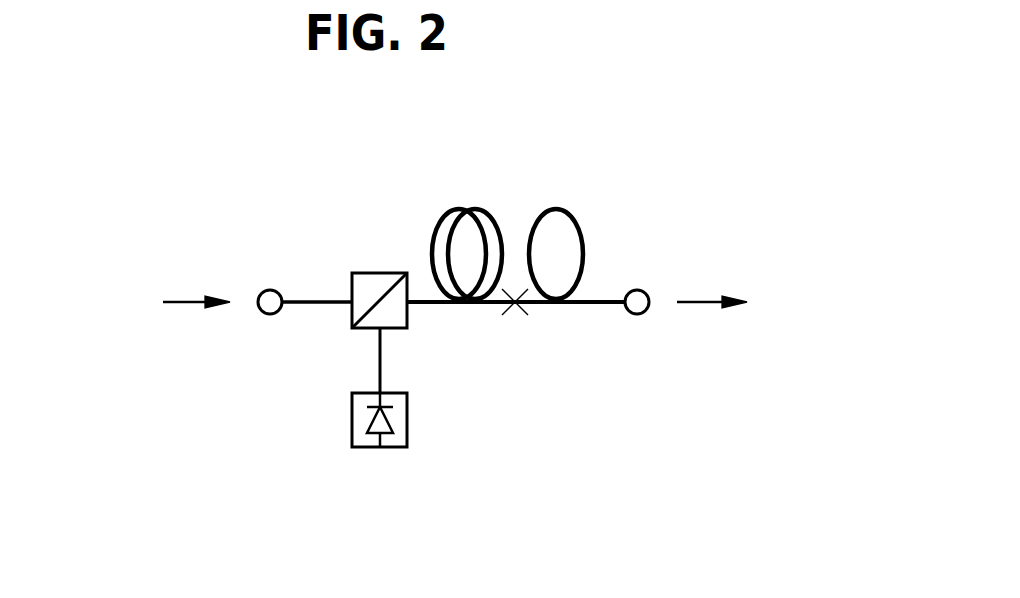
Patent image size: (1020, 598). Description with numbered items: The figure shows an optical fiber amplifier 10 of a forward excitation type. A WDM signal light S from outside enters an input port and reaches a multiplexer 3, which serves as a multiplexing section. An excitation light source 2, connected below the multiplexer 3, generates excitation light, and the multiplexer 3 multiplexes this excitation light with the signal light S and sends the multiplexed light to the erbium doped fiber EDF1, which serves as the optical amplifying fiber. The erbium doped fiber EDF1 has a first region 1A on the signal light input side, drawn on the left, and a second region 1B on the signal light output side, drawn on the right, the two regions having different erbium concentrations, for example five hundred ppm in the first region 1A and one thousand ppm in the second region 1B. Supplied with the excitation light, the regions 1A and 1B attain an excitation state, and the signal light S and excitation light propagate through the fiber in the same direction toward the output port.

The optical fiber amplifier 10 is at (268, 140).
The multiplexer 3 is at (352, 273).
The excitation light source 2 is at (352, 393).
The erbium doped fiber EDF1 is at (530, 163).
The first region 1A is at (437, 217).
The second region 1B is at (573, 218).